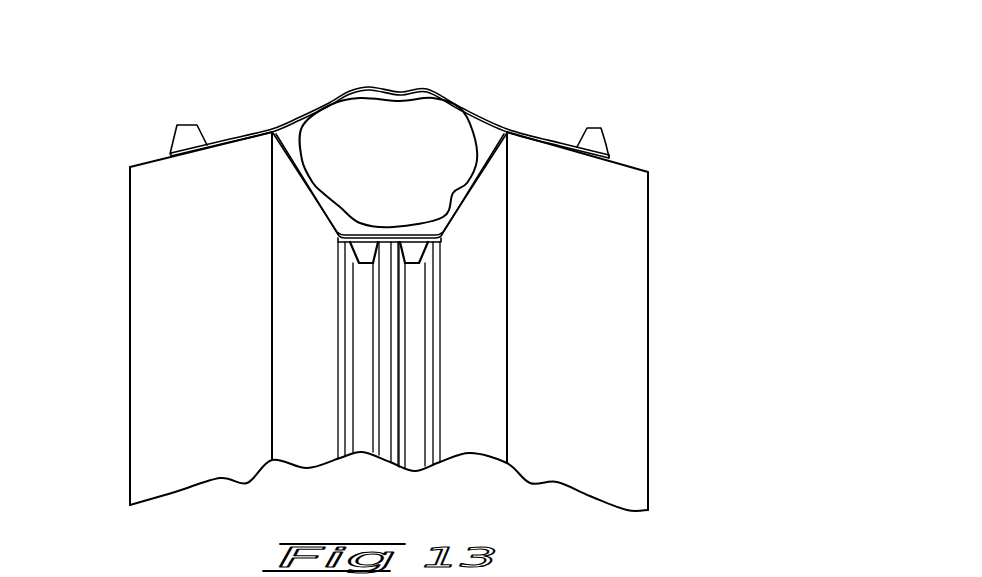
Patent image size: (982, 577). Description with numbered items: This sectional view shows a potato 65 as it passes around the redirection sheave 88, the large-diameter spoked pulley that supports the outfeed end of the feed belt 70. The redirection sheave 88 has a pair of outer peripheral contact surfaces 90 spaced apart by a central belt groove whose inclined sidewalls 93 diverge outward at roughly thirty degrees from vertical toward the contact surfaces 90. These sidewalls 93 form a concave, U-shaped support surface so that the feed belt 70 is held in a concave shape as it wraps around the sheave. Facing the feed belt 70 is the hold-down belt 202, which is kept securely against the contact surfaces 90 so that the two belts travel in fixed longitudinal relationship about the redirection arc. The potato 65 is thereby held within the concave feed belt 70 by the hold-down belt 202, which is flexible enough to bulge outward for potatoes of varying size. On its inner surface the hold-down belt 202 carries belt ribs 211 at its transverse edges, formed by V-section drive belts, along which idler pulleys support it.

The redirection sheave 88 is at (650, 432).
The outer peripheral contact surfaces 90 is at (152, 313).
The inclined sidewalls 93 is at (290, 330).
The hold-down belt 202 is at (540, 126).
The belt ribs 211 is at (178, 123).
The feed belt 70 is at (350, 231).
The potato 65 is at (423, 125).